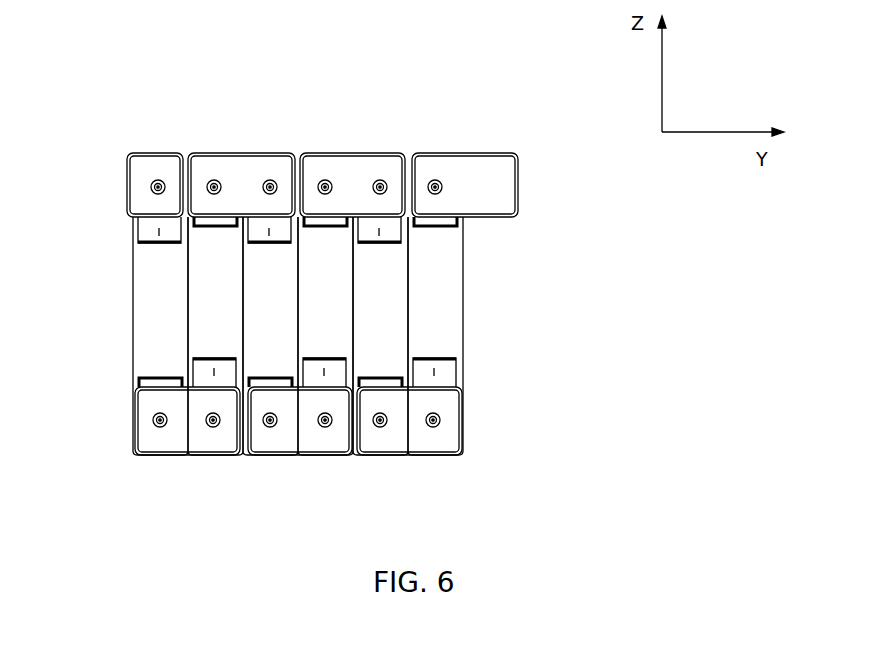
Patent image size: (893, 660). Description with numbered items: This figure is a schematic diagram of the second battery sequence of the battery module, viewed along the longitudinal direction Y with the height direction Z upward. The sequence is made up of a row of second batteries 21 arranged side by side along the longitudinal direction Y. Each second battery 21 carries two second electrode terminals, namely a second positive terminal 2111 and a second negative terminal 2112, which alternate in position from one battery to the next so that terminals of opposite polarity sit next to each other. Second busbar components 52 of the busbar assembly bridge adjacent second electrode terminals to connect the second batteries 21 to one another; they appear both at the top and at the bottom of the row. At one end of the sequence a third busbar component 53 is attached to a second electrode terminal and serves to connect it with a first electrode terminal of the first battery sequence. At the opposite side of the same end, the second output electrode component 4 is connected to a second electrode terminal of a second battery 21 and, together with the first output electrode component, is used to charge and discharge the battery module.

The second output electrode component 4 is at (503, 177).
The second battery 21 is at (150, 305).
The second busbar component 52 is at (245, 163).
The third busbar component 53 is at (157, 164).
The second positive terminal 2111 is at (453, 218).
The second negative terminal 2112 is at (135, 222).